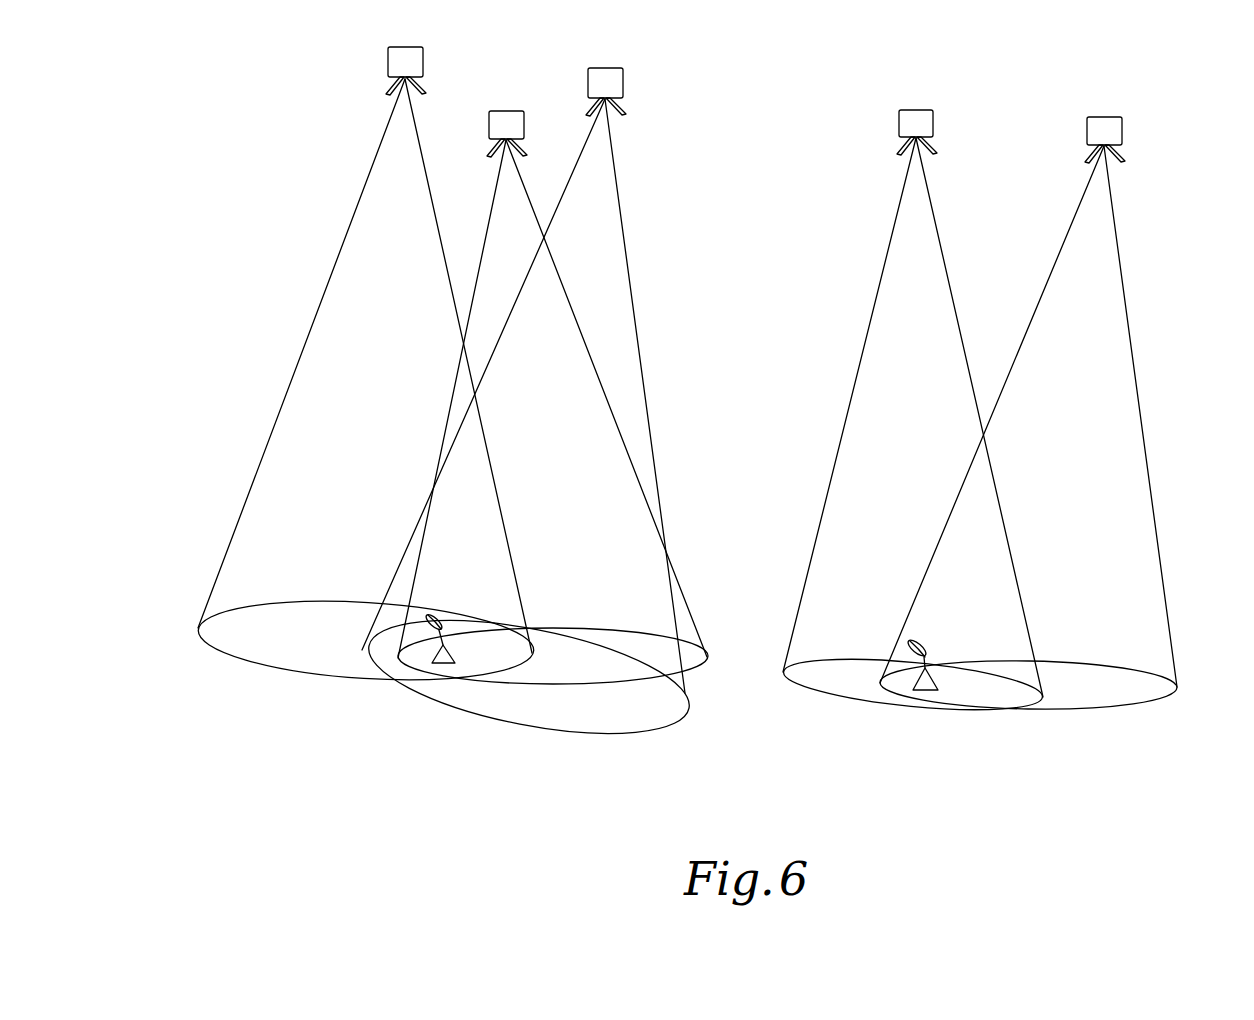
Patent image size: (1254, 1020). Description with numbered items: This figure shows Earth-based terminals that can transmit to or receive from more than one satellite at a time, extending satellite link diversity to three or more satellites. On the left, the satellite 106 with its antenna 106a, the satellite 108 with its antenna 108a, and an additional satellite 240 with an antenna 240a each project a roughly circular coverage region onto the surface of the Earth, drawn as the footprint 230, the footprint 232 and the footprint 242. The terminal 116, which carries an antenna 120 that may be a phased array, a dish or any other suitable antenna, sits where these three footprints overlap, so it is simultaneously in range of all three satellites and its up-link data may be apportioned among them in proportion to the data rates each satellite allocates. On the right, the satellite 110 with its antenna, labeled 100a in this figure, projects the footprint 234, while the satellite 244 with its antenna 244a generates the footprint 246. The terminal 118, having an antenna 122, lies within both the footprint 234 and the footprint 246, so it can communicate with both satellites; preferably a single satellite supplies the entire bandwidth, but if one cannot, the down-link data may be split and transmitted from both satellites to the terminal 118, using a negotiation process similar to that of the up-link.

The satellite 106 is at (425, 62).
The satellite antenna 106a is at (426, 83).
The satellite 108 is at (624, 82).
The satellite antenna 108a is at (627, 104).
The satellite 110 is at (934, 123).
The camera mount 100a is at (937, 148).
The additional satellite 240 is at (525, 123).
The satellite antenna 240a is at (488, 144).
The satellite 244 is at (1123, 132).
The satellite antenna 244a is at (1127, 152).
The terminal 116 is at (454, 655).
The terminal 118 is at (937, 684).
The antenna 120 is at (437, 614).
The antenna 122 is at (922, 645).
The footprint 230 is at (265, 668).
The footprint 232 is at (425, 704).
The footprint 234 is at (820, 694).
The footprint 242 is at (708, 658).
The footprint 246 is at (1073, 712).